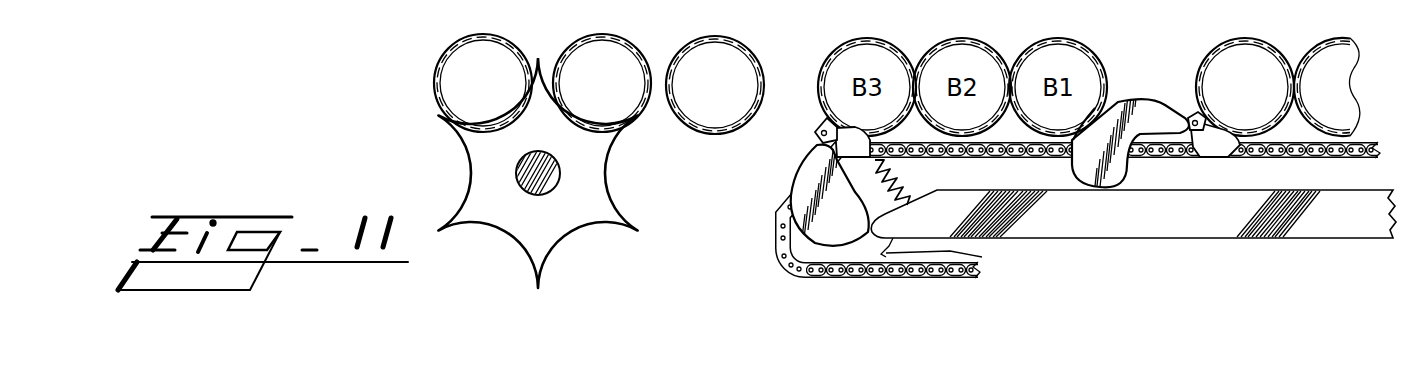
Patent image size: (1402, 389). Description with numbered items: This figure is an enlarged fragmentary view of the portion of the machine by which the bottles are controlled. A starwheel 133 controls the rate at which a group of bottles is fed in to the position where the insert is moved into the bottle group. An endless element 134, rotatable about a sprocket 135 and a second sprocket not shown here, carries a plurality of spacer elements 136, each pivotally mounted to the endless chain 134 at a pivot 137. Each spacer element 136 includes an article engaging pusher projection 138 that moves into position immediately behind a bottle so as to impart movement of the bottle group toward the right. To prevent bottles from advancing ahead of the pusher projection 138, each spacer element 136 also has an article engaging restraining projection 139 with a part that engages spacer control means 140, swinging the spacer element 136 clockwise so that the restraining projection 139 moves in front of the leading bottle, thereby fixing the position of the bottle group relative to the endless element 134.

The starwheel 133 is at (577, 212).
The endless element 134 is at (1332, 152).
The sprocket 135 is at (952, 252).
The spacer element 136 is at (807, 187).
The pivotal mounting 137 is at (820, 131).
The article engaging pusher projection 138 is at (851, 148).
The article engaging restraining projection 139 is at (1093, 106).
The spacer control means 140 is at (1067, 229).